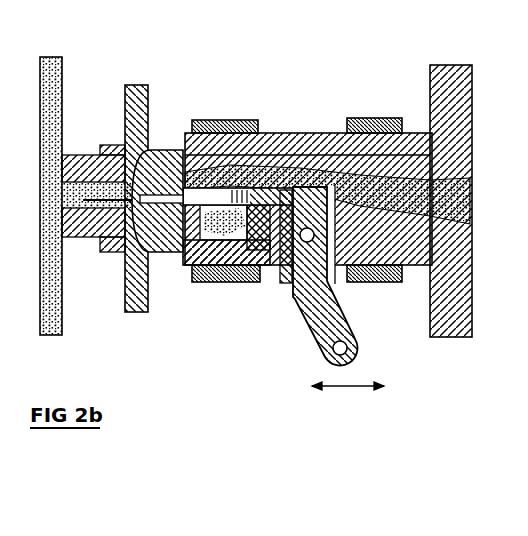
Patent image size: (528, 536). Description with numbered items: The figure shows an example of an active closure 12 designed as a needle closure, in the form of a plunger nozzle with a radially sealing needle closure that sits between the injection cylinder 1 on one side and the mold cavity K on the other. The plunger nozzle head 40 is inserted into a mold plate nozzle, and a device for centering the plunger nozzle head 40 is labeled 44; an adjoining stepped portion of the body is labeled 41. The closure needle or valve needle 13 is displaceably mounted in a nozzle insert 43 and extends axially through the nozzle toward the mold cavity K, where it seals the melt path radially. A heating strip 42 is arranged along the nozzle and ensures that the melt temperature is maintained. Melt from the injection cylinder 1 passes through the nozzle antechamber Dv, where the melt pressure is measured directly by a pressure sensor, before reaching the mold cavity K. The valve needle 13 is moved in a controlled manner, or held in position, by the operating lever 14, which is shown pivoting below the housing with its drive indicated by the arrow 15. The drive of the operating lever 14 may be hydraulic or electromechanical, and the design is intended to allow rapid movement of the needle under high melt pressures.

The mold cavity K is at (62, 72).
The injection cylinder 1 is at (450, 65).
The active closure 12 is at (345, 107).
The valve needle 13 is at (200, 283).
The operating lever 14 is at (307, 328).
The controlled drive 15 is at (352, 389).
The plunger nozzle head 40 is at (160, 150).
The body step 41 is at (106, 145).
The heating strip 42 is at (253, 283).
The nozzle insert 43 is at (318, 133).
The centering device 44 is at (150, 312).
The nozzle antechamber Dv is at (213, 125).